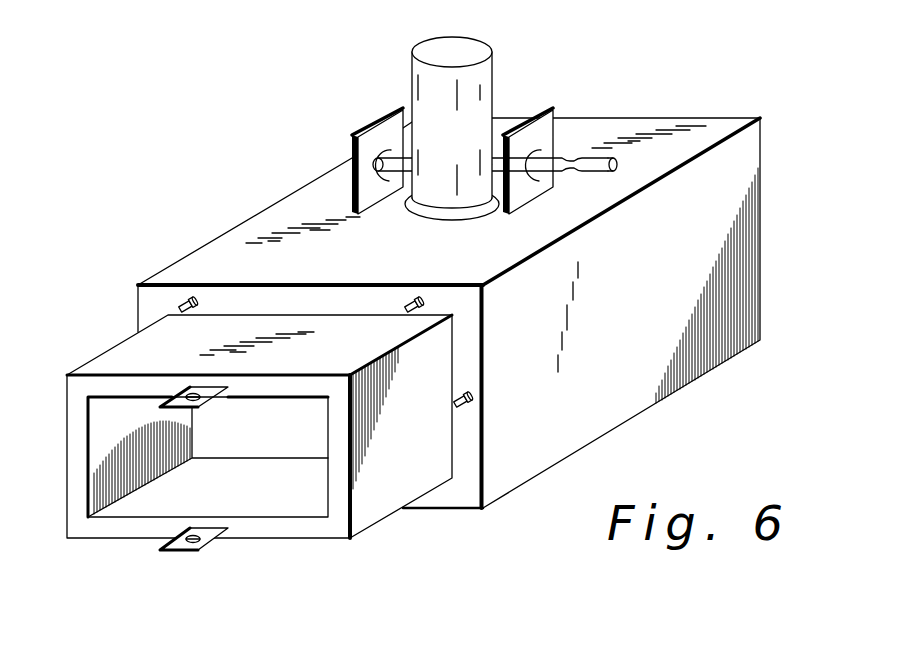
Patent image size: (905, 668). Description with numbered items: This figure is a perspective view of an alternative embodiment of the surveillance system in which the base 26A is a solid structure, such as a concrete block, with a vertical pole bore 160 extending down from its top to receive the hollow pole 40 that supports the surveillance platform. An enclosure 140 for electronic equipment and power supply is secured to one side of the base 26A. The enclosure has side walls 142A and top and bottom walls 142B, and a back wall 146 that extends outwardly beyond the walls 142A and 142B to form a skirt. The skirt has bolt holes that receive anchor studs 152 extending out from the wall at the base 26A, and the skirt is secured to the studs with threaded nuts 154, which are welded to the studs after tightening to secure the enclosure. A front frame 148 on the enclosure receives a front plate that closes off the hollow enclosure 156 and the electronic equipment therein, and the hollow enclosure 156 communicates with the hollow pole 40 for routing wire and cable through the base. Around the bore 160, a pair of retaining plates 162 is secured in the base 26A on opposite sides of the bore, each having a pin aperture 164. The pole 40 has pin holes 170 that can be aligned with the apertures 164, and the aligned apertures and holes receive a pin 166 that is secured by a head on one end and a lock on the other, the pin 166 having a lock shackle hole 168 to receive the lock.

The base 26A is at (332, 272).
The hollow pole 40 is at (412, 80).
The enclosure 140 is at (425, 440).
The side walls 142A is at (365, 518).
The top and bottom walls 142B is at (120, 357).
The back wall 146 is at (472, 498).
The front frame 148 is at (300, 530).
The anchor studs 152 is at (178, 300).
The threaded nuts 154 is at (472, 392).
The hollow enclosure 156 is at (283, 444).
The pole bore 160 is at (452, 221).
The retaining plates 162 is at (550, 128).
The pin apertures 164 is at (381, 180).
The pin 166 is at (616, 163).
The lock shackle hole 168 is at (570, 156).
The pin holes 170 is at (490, 160).